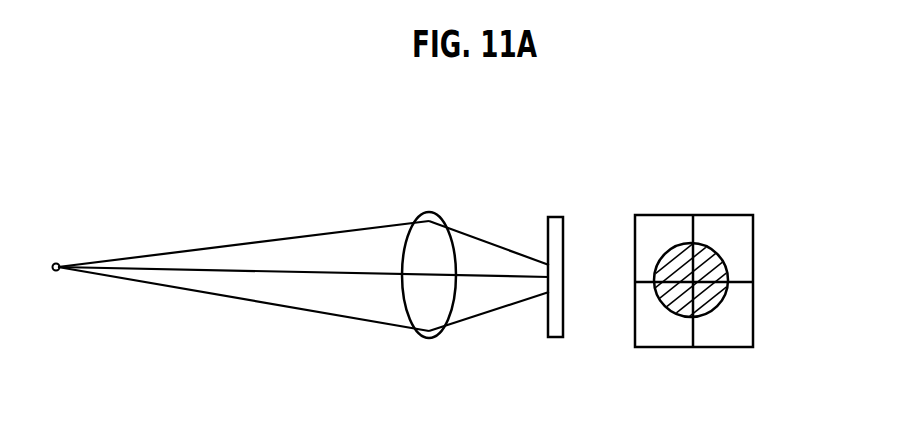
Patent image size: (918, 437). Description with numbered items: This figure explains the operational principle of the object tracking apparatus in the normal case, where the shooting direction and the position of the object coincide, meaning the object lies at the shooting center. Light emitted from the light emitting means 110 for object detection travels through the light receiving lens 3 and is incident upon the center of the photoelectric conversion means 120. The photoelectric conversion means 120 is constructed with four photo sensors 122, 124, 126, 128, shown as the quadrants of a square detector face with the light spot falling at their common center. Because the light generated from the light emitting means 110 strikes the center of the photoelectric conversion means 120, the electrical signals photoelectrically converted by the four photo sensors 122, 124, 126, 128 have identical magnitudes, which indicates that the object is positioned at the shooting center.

The light emitting means 110 is at (54, 272).
The light receiving lens 3 is at (433, 339).
The photoelectric conversion means 120 is at (553, 337).
The photo sensor 122 is at (665, 213).
The photo sensor 124 is at (726, 213).
The photo sensor 126 is at (662, 333).
The photo sensor 128 is at (722, 335).